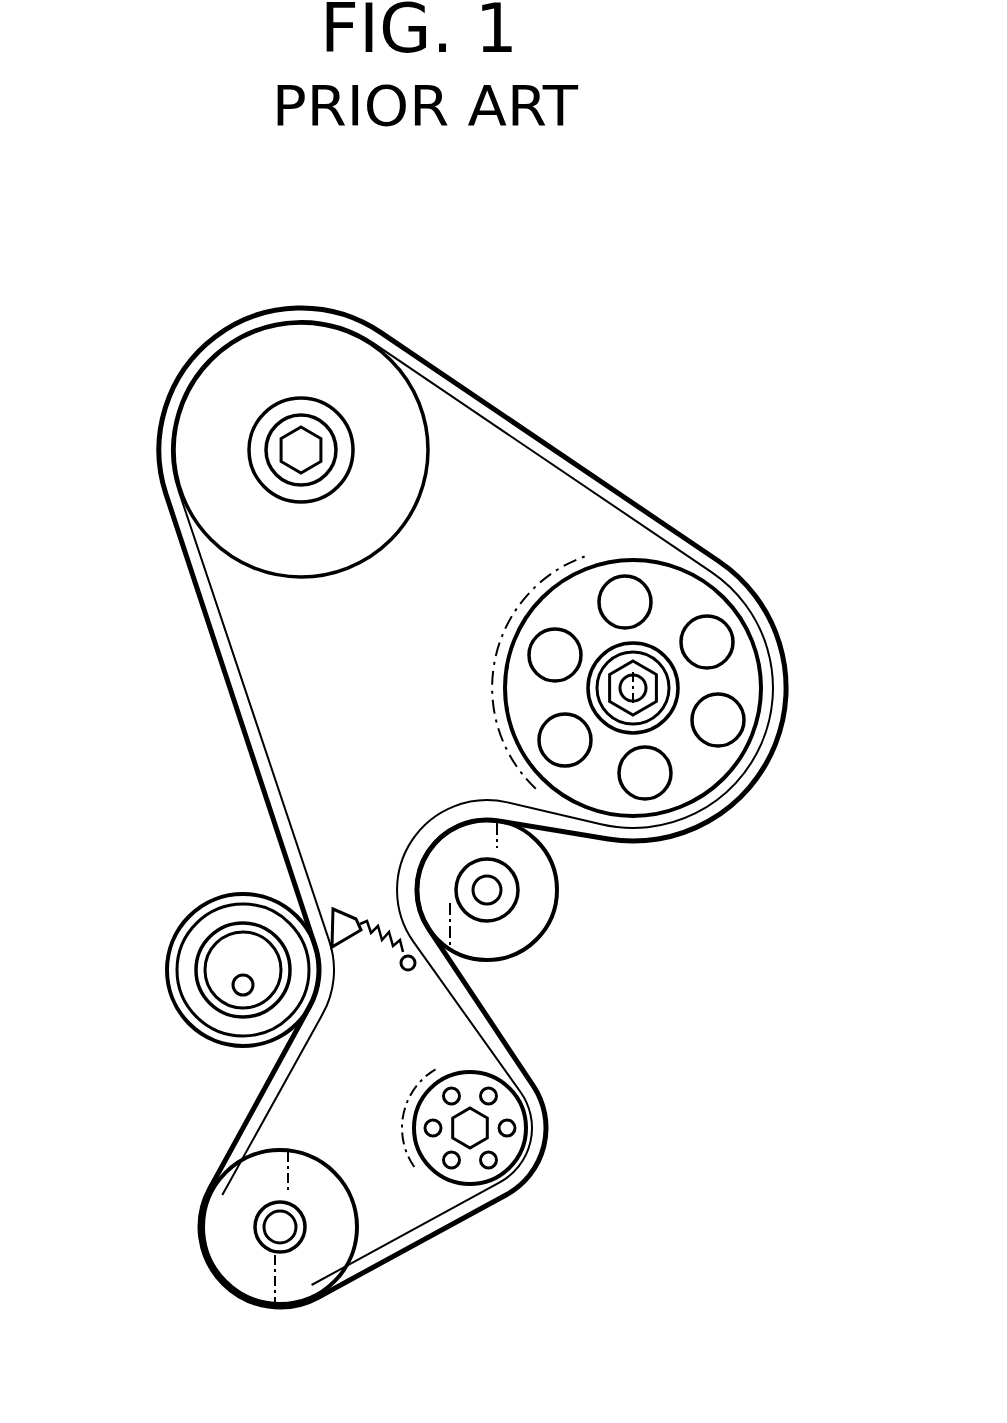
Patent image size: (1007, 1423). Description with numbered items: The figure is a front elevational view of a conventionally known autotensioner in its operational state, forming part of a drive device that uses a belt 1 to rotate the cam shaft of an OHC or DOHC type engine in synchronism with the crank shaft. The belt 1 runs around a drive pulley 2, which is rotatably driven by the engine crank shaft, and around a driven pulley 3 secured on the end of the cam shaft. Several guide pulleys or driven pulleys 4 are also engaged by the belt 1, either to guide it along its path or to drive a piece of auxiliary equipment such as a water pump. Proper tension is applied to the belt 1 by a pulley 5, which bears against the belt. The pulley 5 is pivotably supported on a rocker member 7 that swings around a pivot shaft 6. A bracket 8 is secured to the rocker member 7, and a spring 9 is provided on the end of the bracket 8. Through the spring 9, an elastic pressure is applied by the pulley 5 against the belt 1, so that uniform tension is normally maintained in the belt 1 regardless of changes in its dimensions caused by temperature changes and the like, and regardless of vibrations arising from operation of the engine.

The belt 1 is at (693, 537).
The drive pulley 2 is at (230, 1220).
The driven pulley 3 is at (375, 375).
The guide pulleys or driven pulleys 4 is at (713, 773).
The pulley 5 is at (188, 920).
The pivot shaft 6 is at (240, 990).
The rocker member 7 is at (218, 973).
The bracket 8 is at (333, 909).
The spring 9 is at (377, 953).